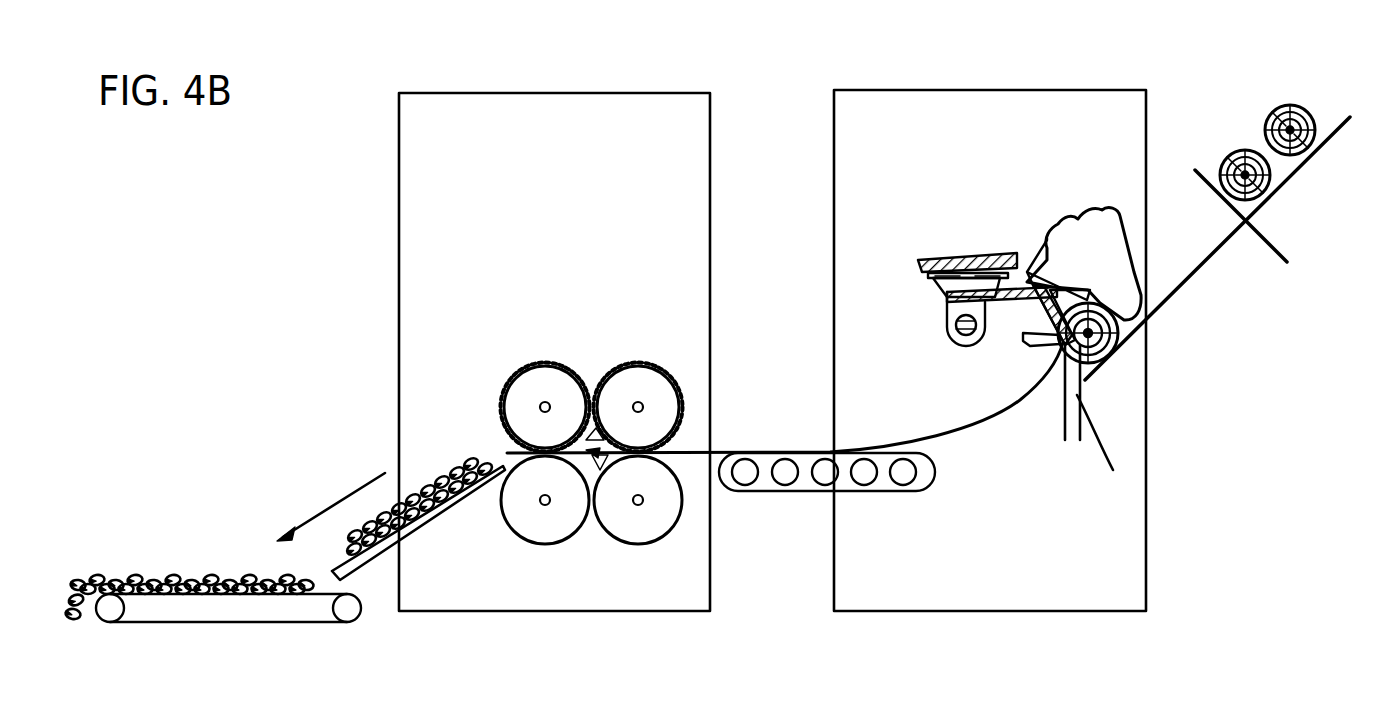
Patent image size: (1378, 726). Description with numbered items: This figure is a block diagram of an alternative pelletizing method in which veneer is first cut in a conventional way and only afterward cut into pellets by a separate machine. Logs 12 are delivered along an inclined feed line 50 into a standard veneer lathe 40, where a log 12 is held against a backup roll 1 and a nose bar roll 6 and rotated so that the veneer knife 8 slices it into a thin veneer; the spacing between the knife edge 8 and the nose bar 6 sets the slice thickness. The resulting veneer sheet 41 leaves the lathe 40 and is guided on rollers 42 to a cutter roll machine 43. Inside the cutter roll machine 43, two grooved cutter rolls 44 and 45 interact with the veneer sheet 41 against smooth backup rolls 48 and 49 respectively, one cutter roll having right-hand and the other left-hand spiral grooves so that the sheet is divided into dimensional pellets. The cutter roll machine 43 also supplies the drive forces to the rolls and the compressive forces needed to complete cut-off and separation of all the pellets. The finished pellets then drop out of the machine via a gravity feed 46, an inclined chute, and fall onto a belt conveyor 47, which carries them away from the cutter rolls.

The backup roll 1 is at (1110, 281).
The nose bar roll 6 is at (1048, 344).
The veneer knife 8 is at (1091, 416).
The log 12 is at (1276, 106).
The standard veneer lathe 40 is at (930, 90).
The veneer sheet 41 is at (988, 426).
The rollers 42 is at (867, 492).
The cutter roll machine 43 is at (572, 93).
The cutter roll 44 is at (679, 381).
The cutter roll 45 is at (505, 386).
The gravity feed 46 is at (436, 514).
The conveyor 47 is at (224, 622).
The lower roll 48 is at (651, 545).
The lower roll 49 is at (546, 545).
The log conveyor 50 is at (1247, 230).